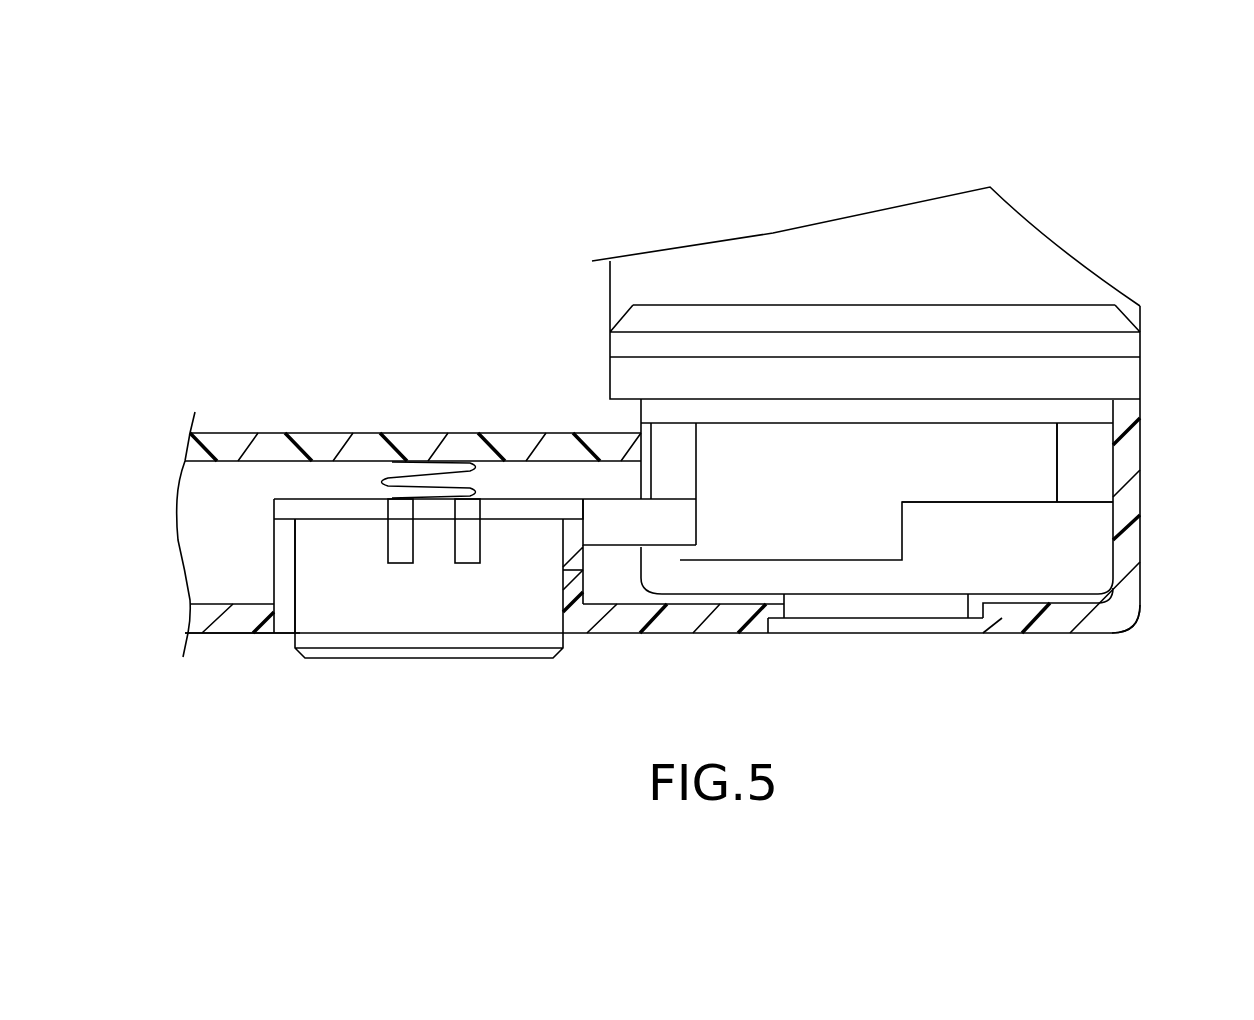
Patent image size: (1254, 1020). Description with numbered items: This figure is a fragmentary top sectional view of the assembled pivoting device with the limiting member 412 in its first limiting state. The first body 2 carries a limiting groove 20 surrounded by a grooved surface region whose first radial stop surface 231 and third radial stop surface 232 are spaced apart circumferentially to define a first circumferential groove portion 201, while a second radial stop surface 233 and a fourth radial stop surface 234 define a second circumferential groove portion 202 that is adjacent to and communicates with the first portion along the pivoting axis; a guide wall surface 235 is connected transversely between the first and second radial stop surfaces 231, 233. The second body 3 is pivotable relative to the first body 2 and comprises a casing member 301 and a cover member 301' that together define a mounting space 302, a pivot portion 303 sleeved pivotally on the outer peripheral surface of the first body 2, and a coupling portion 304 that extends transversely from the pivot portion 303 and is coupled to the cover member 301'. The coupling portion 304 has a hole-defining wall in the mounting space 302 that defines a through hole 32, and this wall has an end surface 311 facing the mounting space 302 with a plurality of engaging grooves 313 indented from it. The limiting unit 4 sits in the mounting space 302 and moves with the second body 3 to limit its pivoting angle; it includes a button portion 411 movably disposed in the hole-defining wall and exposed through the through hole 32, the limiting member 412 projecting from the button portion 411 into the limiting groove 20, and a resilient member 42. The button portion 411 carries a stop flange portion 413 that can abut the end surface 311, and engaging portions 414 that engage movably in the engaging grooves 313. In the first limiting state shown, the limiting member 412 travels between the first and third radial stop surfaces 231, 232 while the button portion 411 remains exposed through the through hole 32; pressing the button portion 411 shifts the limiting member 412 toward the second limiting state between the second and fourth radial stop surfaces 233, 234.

The first body 2 is at (1060, 368).
The limiting groove 20 is at (876, 327).
The first circumferential groove portion 201 is at (818, 528).
The second circumferential groove portion 202 is at (967, 470).
The second body 3 is at (278, 392).
The casing member 301 is at (586, 653).
The cover member 301' is at (413, 390).
The mounting space 302 is at (228, 519).
The pivot portion 303 is at (1120, 613).
The coupling portion 304 is at (198, 617).
The first radial stop surface 231 is at (900, 532).
The third radial stop surface 232 is at (687, 550).
The second radial stop surface 233 is at (1057, 455).
The fourth radial stop surface 234 is at (693, 478).
The guide wall surface 235 is at (1000, 502).
The limiting unit 4 is at (496, 574).
The button portion 411 is at (530, 617).
The limiting member 412 is at (667, 517).
The stop flange portion 413 is at (485, 434).
The end surface 311 is at (287, 518).
The engaging portions 414 is at (420, 613).
The engaging grooves 313 is at (468, 552).
The resilient member 42 is at (458, 492).
The through hole 32 is at (293, 572).